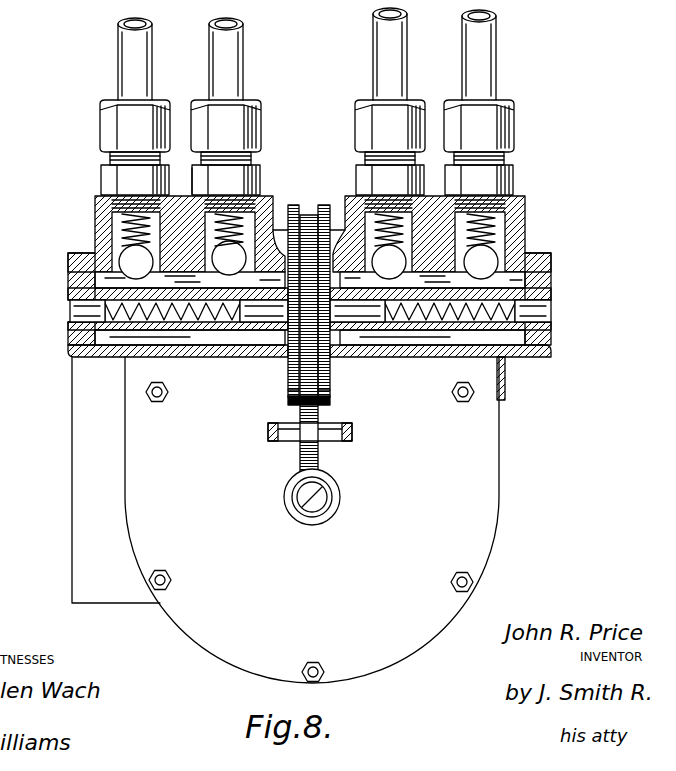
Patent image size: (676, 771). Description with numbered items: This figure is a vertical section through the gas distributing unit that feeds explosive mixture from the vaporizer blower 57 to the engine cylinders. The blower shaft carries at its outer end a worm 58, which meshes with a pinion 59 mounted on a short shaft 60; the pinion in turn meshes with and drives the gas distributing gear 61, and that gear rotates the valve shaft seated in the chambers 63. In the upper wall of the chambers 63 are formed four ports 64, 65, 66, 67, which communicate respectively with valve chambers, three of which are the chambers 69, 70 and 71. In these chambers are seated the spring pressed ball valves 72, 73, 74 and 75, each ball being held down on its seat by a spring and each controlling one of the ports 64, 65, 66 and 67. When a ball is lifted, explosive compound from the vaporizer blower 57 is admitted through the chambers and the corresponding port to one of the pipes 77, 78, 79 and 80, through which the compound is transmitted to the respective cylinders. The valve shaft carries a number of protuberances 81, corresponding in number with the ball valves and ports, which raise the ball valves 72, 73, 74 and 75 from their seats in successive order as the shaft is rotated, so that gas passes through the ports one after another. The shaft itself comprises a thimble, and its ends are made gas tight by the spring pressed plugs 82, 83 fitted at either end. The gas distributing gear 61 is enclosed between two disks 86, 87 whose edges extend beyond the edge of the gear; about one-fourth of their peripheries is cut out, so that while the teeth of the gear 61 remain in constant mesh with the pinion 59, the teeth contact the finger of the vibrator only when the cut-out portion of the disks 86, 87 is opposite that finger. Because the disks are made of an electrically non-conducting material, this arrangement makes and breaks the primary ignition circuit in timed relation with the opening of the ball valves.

The vaporizer blower 57 is at (475, 540).
The worm 58 is at (320, 515).
The pinion 59 is at (315, 455).
The short shaft 60 is at (340, 433).
The gas distributing gear 61 is at (315, 372).
The chambers 63 is at (72, 343).
The port 64 is at (552, 285).
The port 65 is at (412, 300).
The port 66 is at (497, 235).
The port 67 is at (100, 283).
The chamber 69 is at (358, 200).
The chamber 70 is at (265, 195).
The chamber 71 is at (115, 230).
The spring pressed ball valve 72 is at (487, 258).
The spring pressed ball valve 73 is at (353, 215).
The spring pressed ball valve 74 is at (192, 194).
The spring pressed ball valve 75 is at (130, 260).
The pipe 77 is at (490, 65).
The pipe 78 is at (397, 67).
The pipe 79 is at (238, 68).
The pipe 80 is at (143, 70).
The protuberances 81 is at (279, 214).
The spring pressed plug 82 is at (255, 312).
The spring pressed plug 83 is at (75, 306).
The disk 86 is at (322, 400).
The disk 87 is at (290, 395).